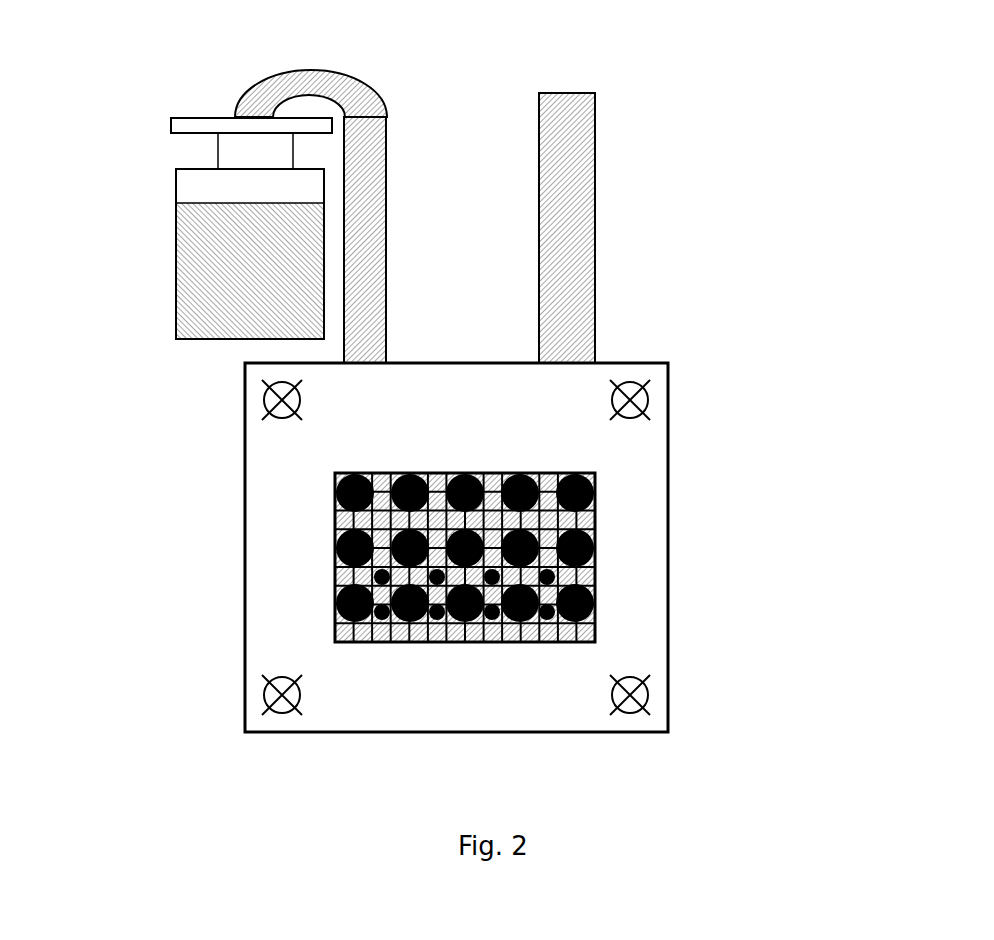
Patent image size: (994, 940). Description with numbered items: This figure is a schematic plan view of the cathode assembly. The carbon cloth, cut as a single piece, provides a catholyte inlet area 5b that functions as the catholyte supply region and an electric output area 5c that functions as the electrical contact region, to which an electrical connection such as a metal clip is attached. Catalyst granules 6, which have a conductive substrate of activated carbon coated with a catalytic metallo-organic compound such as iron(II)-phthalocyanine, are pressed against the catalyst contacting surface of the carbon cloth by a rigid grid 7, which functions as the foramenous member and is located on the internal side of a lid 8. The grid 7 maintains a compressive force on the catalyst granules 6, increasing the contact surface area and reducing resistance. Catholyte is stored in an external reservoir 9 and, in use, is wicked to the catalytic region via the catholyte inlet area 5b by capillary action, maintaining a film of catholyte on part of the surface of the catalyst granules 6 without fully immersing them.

The catholyte inlet area 5b is at (373, 153).
The electric output area 5c is at (560, 140).
The catalyst granules 6 is at (595, 603).
The rigid grid 7 is at (585, 518).
The lid 8 is at (263, 563).
The external reservoir 9 is at (200, 240).